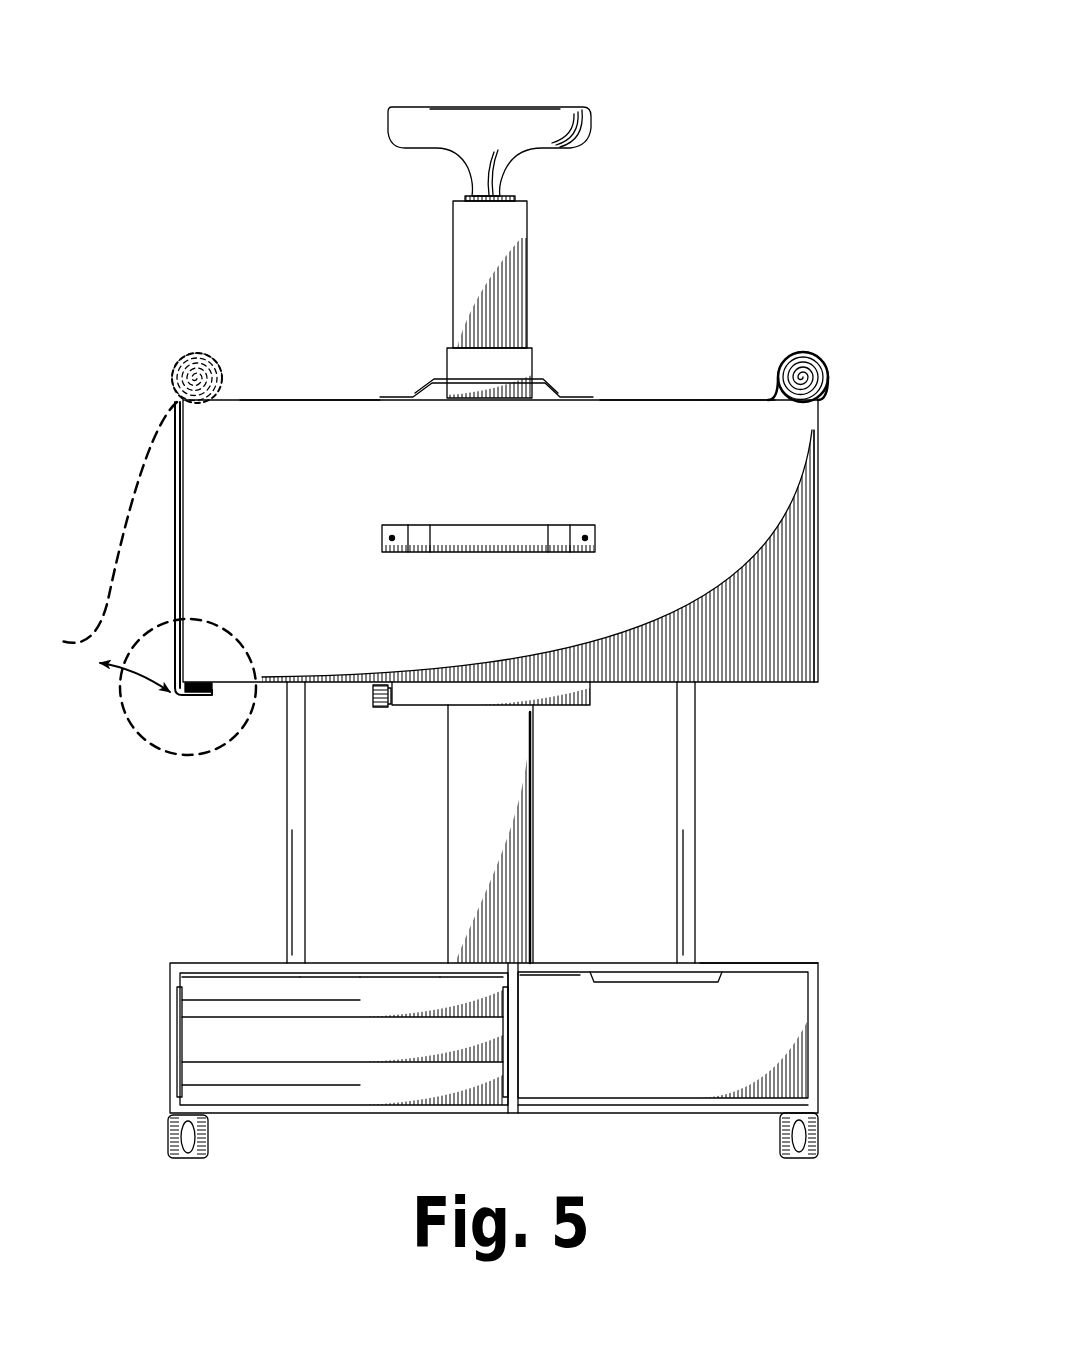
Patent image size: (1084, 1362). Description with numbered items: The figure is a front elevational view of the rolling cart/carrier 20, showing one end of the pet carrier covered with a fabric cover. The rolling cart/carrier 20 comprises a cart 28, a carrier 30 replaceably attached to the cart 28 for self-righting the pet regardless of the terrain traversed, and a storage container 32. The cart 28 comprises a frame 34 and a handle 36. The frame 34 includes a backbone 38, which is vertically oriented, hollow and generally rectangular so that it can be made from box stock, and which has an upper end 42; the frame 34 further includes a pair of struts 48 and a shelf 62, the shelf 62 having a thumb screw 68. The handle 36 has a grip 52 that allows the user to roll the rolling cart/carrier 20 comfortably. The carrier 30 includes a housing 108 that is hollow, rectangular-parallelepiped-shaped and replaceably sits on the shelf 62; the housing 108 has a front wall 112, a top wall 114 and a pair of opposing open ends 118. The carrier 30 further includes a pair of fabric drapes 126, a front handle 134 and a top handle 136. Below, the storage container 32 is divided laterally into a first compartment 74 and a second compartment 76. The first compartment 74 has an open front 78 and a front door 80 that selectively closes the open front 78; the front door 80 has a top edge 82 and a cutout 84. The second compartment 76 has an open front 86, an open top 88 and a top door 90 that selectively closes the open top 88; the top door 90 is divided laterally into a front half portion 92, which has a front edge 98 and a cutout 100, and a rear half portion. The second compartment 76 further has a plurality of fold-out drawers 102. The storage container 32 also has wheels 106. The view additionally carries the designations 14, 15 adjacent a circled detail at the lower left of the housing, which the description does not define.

The rolling cart/carrier 20 is at (179, 195).
The cart 28 is at (410, 105).
The grip 52 is at (468, 105).
The handle 36 is at (556, 103).
The upper end 42 is at (468, 335).
The backbone 38 is at (447, 370).
The top handle 136 is at (556, 380).
The storage container 32 is at (822, 545).
The front wall 112 is at (660, 480).
The carrier 30 is at (305, 395).
The housing 108 is at (683, 393).
The top wall 114 is at (733, 397).
The fabric drapes 126 is at (840, 372).
The open ends 118 is at (186, 523).
The foot pad 14 is at (161, 742).
The foot pad 15 is at (198, 687).
The front handle 134 is at (490, 550).
The shelf 62 is at (568, 707).
The thumb screw 68 is at (373, 692).
The frame 34 is at (537, 822).
The struts 48 is at (305, 812).
The second compartment 76 is at (182, 958).
The open front 86 is at (190, 1043).
The open top 88 is at (240, 985).
The top door 90 is at (318, 975).
The front half portion 92 is at (405, 975).
The front edge 98 is at (455, 970).
The cutout 100 is at (370, 1000).
The fold-out drawers 102 is at (265, 1085).
The top edge 82 is at (795, 963).
The first compartment 74 is at (740, 955).
The open front 78 is at (548, 975).
The cutout 84 is at (630, 982).
The front door 80 is at (673, 1050).
The wheels 106 is at (170, 1140).